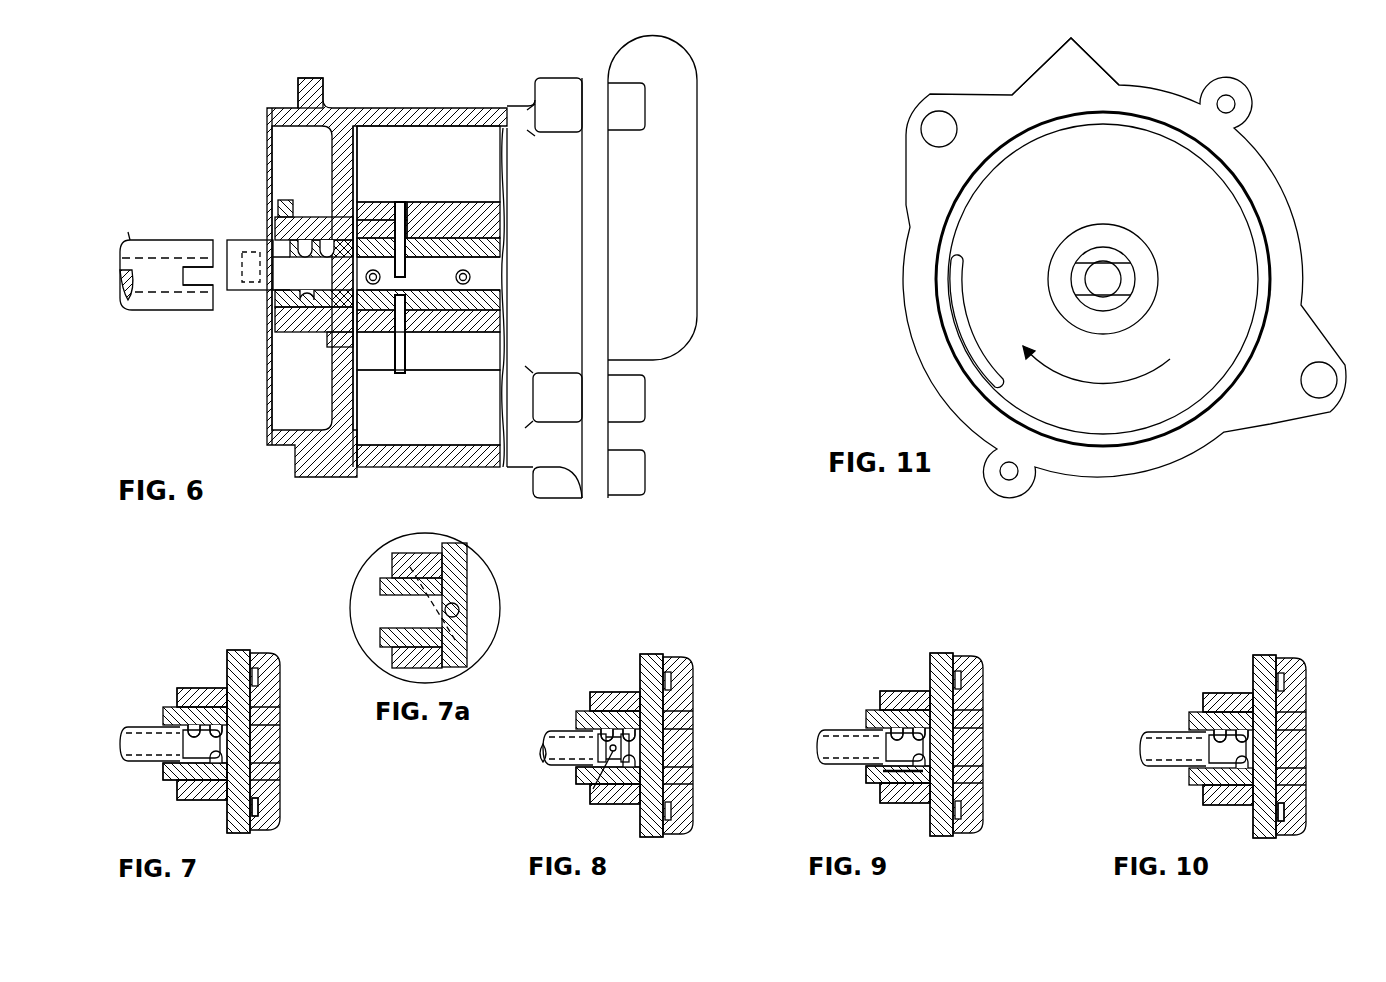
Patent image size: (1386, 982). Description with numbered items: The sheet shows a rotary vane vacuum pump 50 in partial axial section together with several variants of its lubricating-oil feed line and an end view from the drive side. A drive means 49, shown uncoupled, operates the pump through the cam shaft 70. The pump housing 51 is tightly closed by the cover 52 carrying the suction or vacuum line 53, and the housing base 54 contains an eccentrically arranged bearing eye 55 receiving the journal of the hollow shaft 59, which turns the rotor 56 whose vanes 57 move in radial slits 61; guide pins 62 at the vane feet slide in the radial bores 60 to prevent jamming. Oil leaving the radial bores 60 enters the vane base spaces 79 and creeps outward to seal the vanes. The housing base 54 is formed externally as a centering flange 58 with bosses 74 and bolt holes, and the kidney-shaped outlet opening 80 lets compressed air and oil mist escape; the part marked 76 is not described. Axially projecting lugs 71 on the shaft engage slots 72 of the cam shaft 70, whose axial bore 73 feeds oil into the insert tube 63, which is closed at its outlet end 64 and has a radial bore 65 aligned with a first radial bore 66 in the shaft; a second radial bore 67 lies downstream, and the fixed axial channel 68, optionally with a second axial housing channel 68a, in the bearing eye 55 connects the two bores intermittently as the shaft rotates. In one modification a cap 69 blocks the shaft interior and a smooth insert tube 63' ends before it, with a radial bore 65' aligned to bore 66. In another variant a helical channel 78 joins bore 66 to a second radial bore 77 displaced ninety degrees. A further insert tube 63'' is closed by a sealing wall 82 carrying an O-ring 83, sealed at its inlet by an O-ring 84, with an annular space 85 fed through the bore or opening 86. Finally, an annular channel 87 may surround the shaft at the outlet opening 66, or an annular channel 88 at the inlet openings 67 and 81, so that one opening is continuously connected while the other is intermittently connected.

In FIG. 6, the drive means 49 is at (125, 232).
In FIG. 6, the rotary vane vacuum pump 50 is at (709, 131).
In FIG. 6, the pump housing 51 is at (576, 272).
In FIG. 6, the cover 52 is at (597, 433).
In FIG. 6, the suction or vacuum line 53 is at (676, 176).
In FIG. 11, the suction or vacuum line 53 is at (1072, 60).
In FIG. 6, the housing base 54 is at (330, 386).
In FIG. 11, the housing base 54 is at (972, 231).
In FIG. 6, the bearing eye 55 is at (315, 337).
In FIG. 11, the bearing eye 55 is at (1143, 303).
In FIG. 7, the bearing eye 55 is at (194, 806).
In FIG. 7a, the bearing eye 55 is at (405, 655).
In FIG. 8, the bearing eye 55 is at (616, 815).
In FIG. 9, the bearing eye 55 is at (905, 814).
In FIG. 10, the bearing eye 55 is at (1210, 812).
In FIG. 6, the rotor 56 is at (460, 225).
In FIG. 6, the vanes 57 is at (428, 285).
In FIG. 6, the centering flange 58 is at (308, 80).
In FIG. 11, the centering flange 58 is at (1262, 183).
In FIG. 6, the hollow shaft 59 is at (483, 135).
In FIG. 11, the hollow shaft 59 is at (1083, 243).
In FIG. 7, the hollow shaft 59 is at (279, 741).
In FIG. 7a, the hollow shaft 59 is at (462, 580).
In FIG. 8, the hollow shaft 59 is at (692, 745).
In FIG. 9, the hollow shaft 59 is at (982, 744).
In FIG. 10, the hollow shaft 59 is at (1306, 746).
In FIG. 6, the radial bores 60 is at (415, 300).
In FIG. 6, the radial slits 61 is at (428, 351).
In FIG. 6, the guide pins 62 is at (402, 215).
In FIG. 6, the insert tube 63 is at (234, 291).
In FIG. 11, the insert tube 63 is at (1132, 244).
In FIG. 10, the insert tube 63 is at (1159, 727).
In FIG. 7, the insert tube 63' is at (135, 719).
In FIG. 9, the insert tube 63' is at (838, 721).
In FIG. 8, the insert tube 63'' is at (540, 767).
In FIG. 6, the outlet end 64 is at (298, 322).
In FIG. 6, the radial bore 65 is at (294, 268).
In FIG. 7, the radial bore 65' is at (156, 783).
In FIG. 6, the first radial bore 66 is at (305, 252).
In FIG. 7, the first radial bore 66 is at (173, 691).
In FIG. 7a, the first radial bore 66 is at (410, 585).
In FIG. 8, the first radial bore 66 is at (585, 694).
In FIG. 9, the first radial bore 66 is at (877, 684).
In FIG. 10, the first radial bore 66 is at (1198, 695).
In FIG. 6, the second radial bore 67 is at (336, 252).
In FIG. 7, the second radial bore 67 is at (206, 672).
In FIG. 8, the second radial bore 67 is at (643, 674).
In FIG. 9, the second radial bore 67 is at (935, 674).
In FIG. 10, the second radial bore 67 is at (1253, 681).
In FIG. 6, the axial channel 68 is at (336, 226).
In FIG. 7, the axial channel 68 is at (175, 659).
In FIG. 8, the axial channel 68 is at (615, 675).
In FIG. 9, the axial channel 68 is at (905, 656).
In FIG. 10, the axial channel 68 is at (1214, 663).
In FIG. 9, the second axial housing channel 68a is at (863, 788).
In FIG. 7, the cap 69 is at (255, 743).
In FIG. 9, the cap 69 is at (960, 747).
In FIG. 10, the cap 69 is at (1294, 742).
In FIG. 6, the cam shaft 70 is at (152, 306).
In FIG. 6, the axially projecting lugs 71 is at (242, 250).
In FIG. 11, the axially projecting lugs 71 is at (1078, 276).
In FIG. 6, the recesses or slots 72 is at (200, 240).
In FIG. 6, the axial bore 73 is at (127, 288).
In FIG. 11, the bosses 74 is at (958, 102).
In FIG. 11, the mounting ear 76 is at (1248, 101).
In FIG. 7a, the second radial bore 77 is at (460, 612).
In FIG. 7a, the helical channel 78 is at (418, 570).
In FIG. 6, the vane base spaces 79 is at (490, 353).
In FIG. 11, the kidney-shaped outlet opening 80 is at (952, 293).
In FIG. 7, the radial inlet opening 81 is at (268, 834).
In FIG. 8, the sealing wall 82 is at (674, 740).
In FIG. 8, the O-ring 83 is at (686, 750).
In FIG. 8, the O-ring 84 is at (533, 741).
In FIG. 8, the annular space 85 is at (586, 796).
In FIG. 8, the bore or opening 86 is at (592, 796).
In FIG. 9, the annular channel 87 is at (883, 802).
In FIG. 10, the annular channel 88 is at (1248, 826).